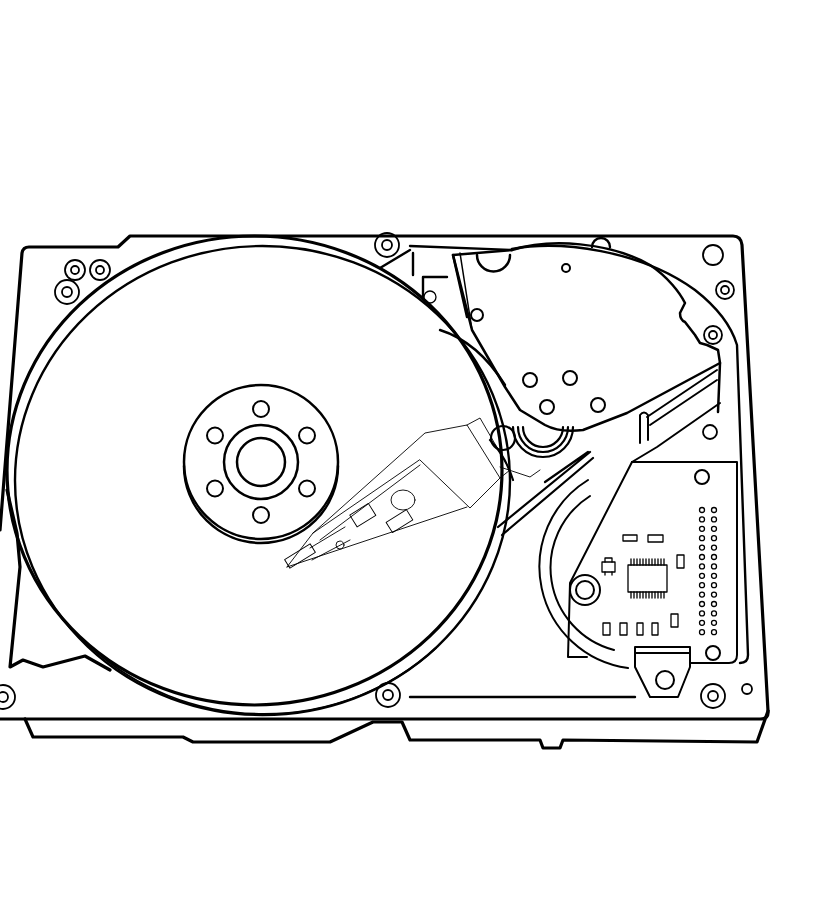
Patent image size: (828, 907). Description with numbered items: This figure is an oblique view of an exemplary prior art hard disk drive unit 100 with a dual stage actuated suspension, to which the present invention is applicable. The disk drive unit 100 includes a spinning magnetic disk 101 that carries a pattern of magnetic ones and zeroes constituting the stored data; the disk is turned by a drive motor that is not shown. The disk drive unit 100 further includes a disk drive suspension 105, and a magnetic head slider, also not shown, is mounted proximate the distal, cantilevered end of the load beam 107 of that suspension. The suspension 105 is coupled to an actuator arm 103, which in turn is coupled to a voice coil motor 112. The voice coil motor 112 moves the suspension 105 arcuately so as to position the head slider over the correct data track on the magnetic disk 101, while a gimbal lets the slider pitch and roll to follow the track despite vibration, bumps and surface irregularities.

The disk drive unit 100 is at (270, 200).
The magnetic disk 101 is at (210, 292).
The actuator arm 103 is at (520, 470).
The disk drive suspension 105 is at (321, 593).
The load beam 107 is at (376, 493).
The voice coil motor 112 is at (582, 333).